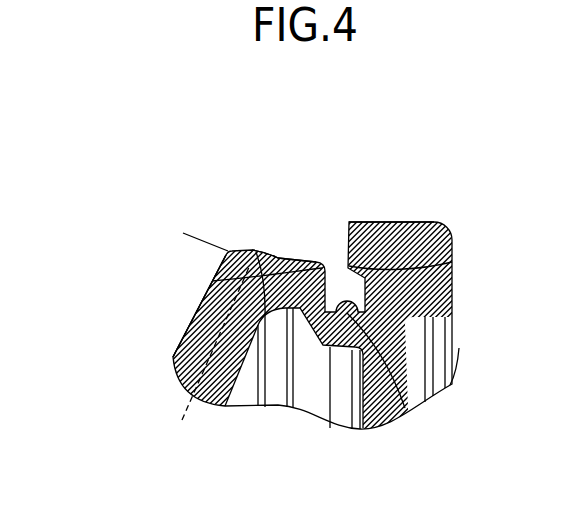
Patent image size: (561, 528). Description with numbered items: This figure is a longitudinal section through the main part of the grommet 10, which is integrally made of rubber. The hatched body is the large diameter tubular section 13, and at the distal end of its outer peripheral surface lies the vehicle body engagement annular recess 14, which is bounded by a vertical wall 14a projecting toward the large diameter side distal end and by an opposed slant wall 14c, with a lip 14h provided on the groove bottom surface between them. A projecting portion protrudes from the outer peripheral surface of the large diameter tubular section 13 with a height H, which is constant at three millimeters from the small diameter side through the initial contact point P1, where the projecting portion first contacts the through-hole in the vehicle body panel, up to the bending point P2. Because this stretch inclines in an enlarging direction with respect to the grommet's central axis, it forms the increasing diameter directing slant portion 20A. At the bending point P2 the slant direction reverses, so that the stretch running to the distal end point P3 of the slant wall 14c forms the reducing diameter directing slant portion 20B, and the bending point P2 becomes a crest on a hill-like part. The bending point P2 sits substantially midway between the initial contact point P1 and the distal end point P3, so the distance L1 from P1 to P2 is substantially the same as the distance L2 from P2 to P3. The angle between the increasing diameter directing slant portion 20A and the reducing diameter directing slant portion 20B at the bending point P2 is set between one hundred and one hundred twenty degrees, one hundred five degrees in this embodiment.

The grommet 10 is at (112, 127).
The large diameter tubular section 13 is at (166, 363).
The vehicle body engagement annular recess 14 is at (332, 260).
The vertical wall 14a is at (368, 282).
The slant wall 14c is at (300, 308).
The lip 14h is at (403, 404).
The increasing diameter directing slant portion 20A is at (196, 313).
The reducing diameter directing slant portion 20B is at (264, 251).
The initial contact point P1 is at (187, 331).
The bending point P2 is at (228, 252).
The slant wall distal end point P3 is at (451, 262).
The distance between initial contact point and bending point L1 is at (196, 240).
The second length L2 is at (335, 262).
The height of projecting portion H is at (220, 378).